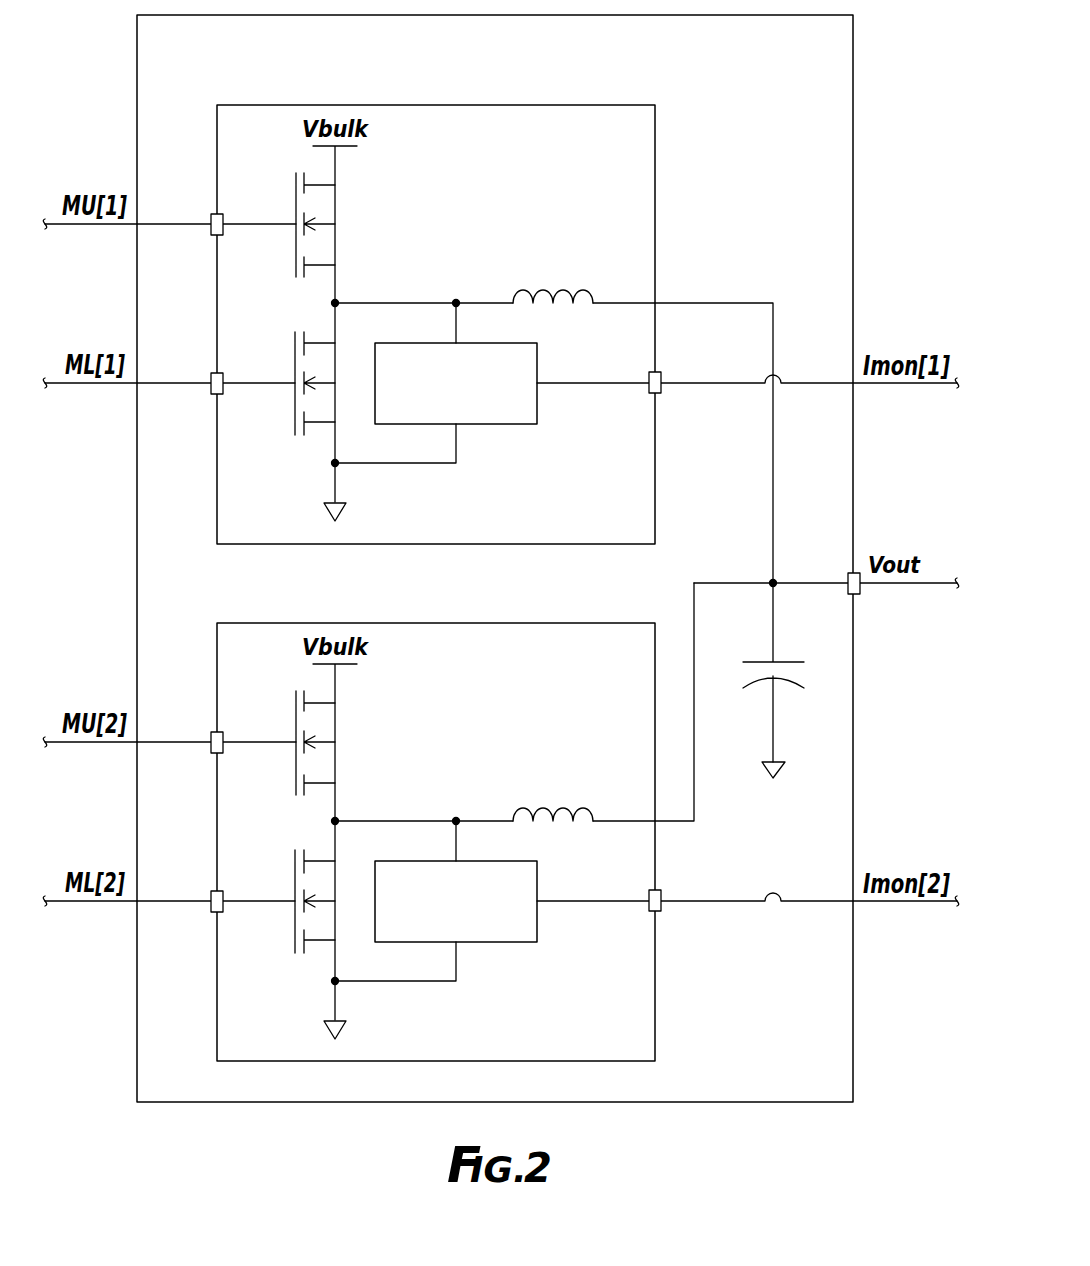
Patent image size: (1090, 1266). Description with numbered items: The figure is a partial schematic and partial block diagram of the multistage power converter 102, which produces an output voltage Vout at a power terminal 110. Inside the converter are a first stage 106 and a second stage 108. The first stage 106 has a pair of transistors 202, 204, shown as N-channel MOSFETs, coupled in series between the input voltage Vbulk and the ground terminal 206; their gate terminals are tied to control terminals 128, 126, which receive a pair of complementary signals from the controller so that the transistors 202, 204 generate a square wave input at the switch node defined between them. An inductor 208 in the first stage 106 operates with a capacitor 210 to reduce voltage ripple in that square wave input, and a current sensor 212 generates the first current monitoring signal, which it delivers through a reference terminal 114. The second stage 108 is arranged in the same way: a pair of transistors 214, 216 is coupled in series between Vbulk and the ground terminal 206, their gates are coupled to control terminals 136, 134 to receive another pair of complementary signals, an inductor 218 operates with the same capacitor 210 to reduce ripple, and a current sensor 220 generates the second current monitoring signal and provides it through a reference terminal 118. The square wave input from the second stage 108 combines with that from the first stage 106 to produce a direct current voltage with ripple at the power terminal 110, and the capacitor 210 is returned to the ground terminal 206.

The multistage power converter 102 is at (517, 82).
The first stage 106 is at (563, 190).
The second stage 108 is at (563, 708).
The power terminal 110 is at (860, 592).
The reference terminal 114 is at (665, 390).
The reference terminal 118 is at (665, 908).
The control terminal 126 is at (211, 377).
The control terminal 128 is at (211, 218).
The control terminal 134 is at (211, 895).
The control terminal 136 is at (211, 736).
The transistor 202 is at (296, 185).
The transistor 204 is at (294, 347).
The ground terminal 206 is at (332, 502).
The inductor 208 is at (518, 290).
The capacitor 210 is at (790, 660).
The current sensor 212 is at (525, 425).
The transistor 214 is at (296, 703).
The transistor 216 is at (294, 865).
The inductor 218 is at (518, 808).
The current sensor 220 is at (525, 943).